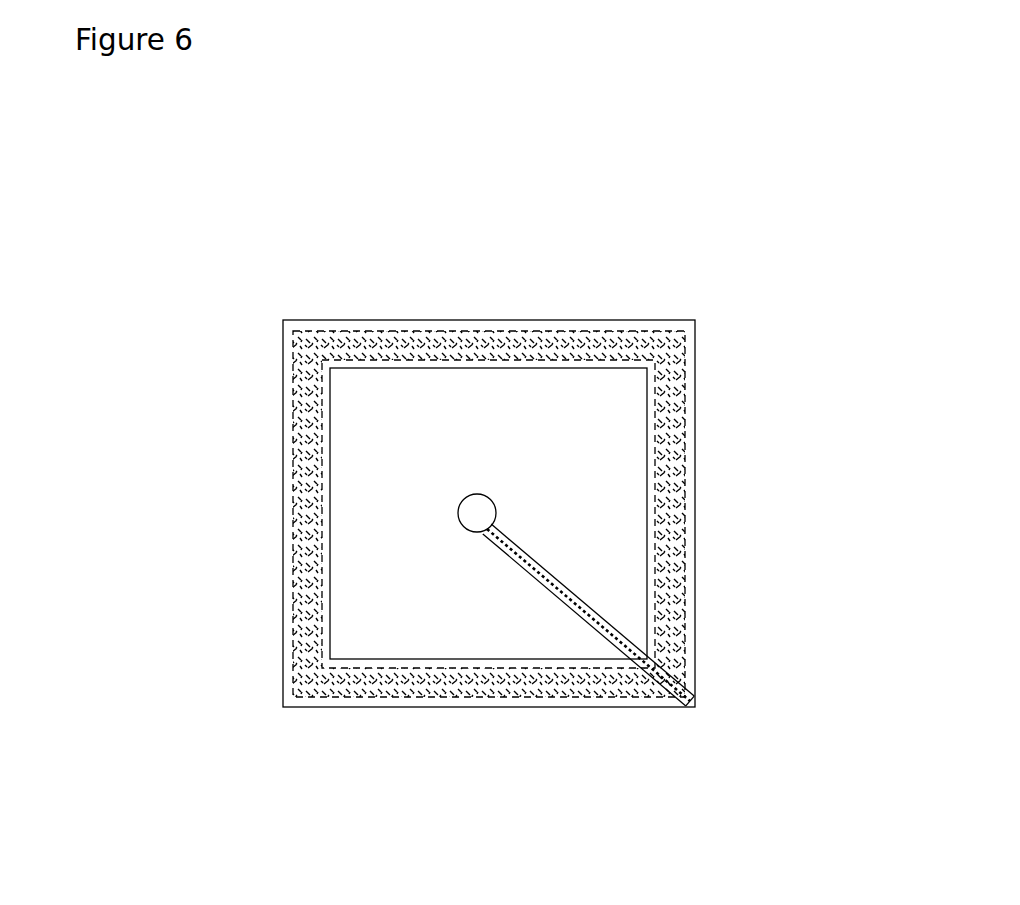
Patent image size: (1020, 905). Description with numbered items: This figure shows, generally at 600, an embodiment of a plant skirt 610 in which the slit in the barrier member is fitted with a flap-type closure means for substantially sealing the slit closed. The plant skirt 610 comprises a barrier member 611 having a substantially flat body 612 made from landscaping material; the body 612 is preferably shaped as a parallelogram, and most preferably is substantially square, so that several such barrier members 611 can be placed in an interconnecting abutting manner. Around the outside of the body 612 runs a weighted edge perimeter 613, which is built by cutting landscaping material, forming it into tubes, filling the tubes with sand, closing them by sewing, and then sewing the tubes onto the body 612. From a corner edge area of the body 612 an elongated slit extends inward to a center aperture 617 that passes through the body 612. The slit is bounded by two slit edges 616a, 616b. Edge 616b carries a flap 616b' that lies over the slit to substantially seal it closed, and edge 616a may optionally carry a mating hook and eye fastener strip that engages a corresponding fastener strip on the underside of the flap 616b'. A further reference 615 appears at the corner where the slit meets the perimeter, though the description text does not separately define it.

The slit closure flap embodiment 600 is at (254, 236).
The plant skirt 610 is at (571, 293).
The barrier member 611 is at (278, 357).
The flat body 612 is at (370, 532).
The weighted edge perimeter 613 is at (293, 500).
The corner key end 615 is at (697, 692).
The slit edge 616a is at (608, 633).
The slit edge 616b is at (669, 610).
The flap 616b' is at (504, 707).
The center aperture 617 is at (472, 533).